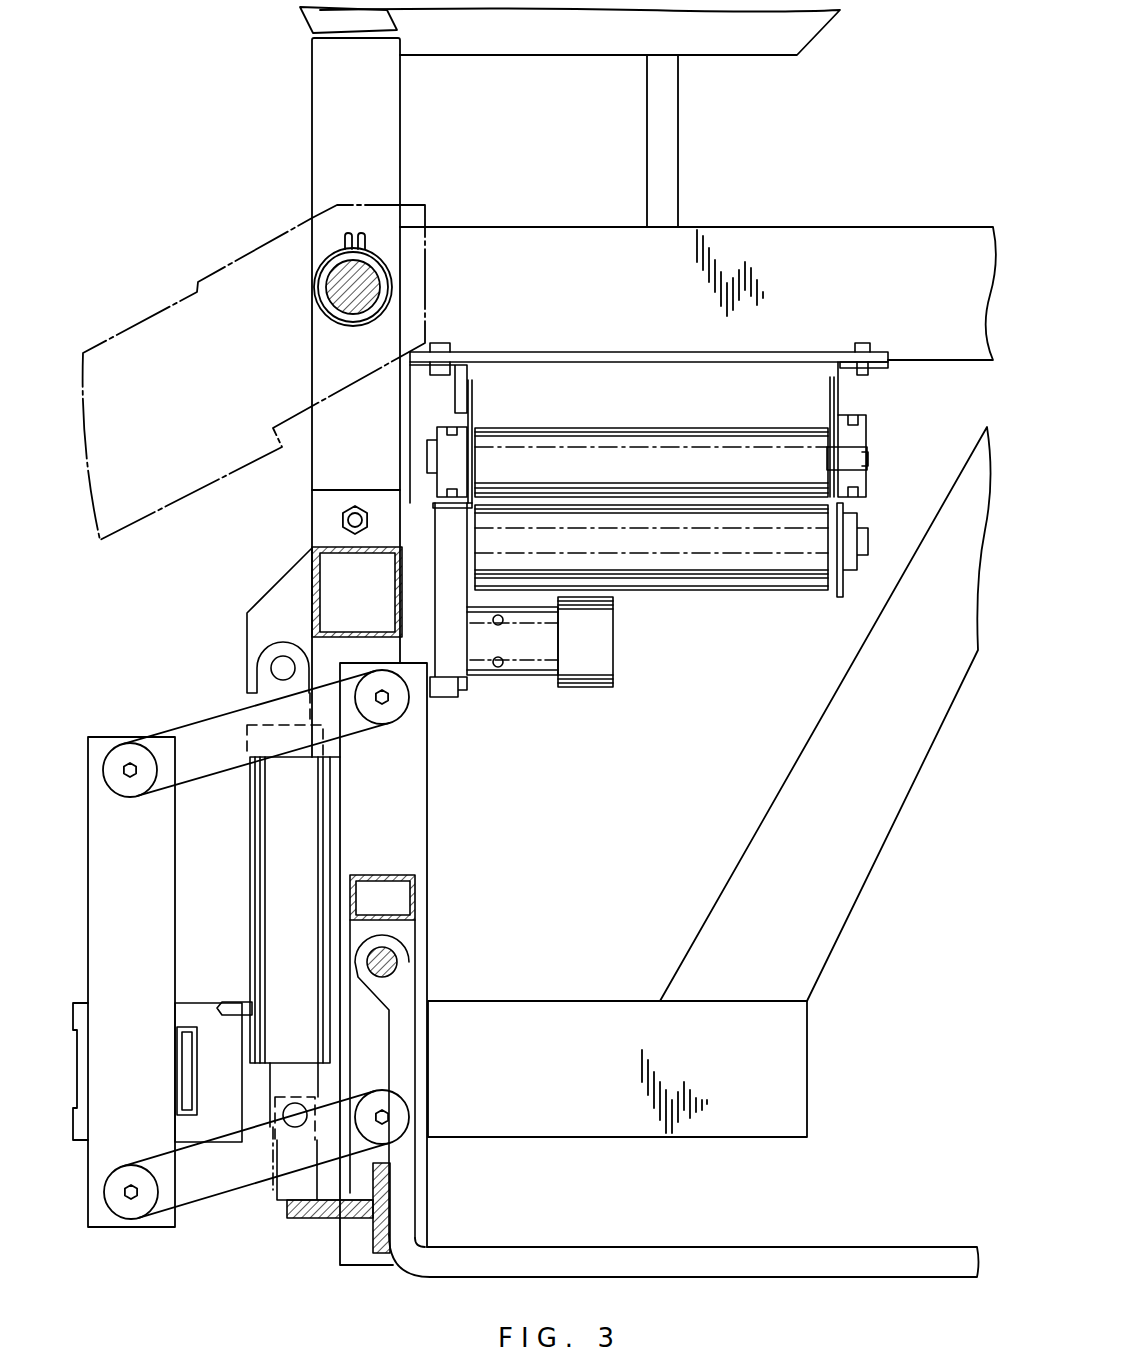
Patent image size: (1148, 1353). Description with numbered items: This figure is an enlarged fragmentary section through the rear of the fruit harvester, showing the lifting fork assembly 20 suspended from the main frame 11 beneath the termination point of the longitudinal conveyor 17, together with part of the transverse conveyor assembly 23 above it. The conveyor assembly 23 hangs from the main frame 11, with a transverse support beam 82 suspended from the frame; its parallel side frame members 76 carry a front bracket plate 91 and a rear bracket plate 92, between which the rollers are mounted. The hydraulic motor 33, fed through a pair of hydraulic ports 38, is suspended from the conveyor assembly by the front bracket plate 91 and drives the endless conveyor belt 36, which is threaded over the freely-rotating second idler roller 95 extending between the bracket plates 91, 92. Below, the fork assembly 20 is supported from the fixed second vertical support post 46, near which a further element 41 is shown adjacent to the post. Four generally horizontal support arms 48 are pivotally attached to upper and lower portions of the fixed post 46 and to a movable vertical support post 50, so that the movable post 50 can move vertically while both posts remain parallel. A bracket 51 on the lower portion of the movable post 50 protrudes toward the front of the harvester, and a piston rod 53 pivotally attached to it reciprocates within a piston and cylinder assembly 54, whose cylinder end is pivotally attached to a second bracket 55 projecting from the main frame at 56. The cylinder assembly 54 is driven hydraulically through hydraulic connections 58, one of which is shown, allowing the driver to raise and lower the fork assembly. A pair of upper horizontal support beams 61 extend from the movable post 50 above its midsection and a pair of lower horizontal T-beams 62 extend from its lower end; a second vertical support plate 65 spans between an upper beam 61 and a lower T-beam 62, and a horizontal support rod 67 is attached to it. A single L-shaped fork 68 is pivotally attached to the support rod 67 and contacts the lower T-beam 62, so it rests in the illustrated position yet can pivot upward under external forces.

The main frame 11 is at (832, 697).
The longitudinal conveyor 17 is at (243, 255).
The lifting fork assembly 20 is at (417, 1066).
The transverse conveyor assembly 23 is at (864, 412).
The hydraulic motor 33 is at (566, 656).
The endless conveyor belt 36 is at (629, 426).
The hydraulic ports 38 is at (502, 659).
The stop block 41 is at (197, 1089).
The second vertical support post 46 is at (107, 897).
The horizontal support arms 48 is at (204, 730).
The movable vertical support post 50 is at (364, 827).
The bracket 51 is at (281, 1196).
The piston rod 53 is at (278, 1091).
The piston and cylinder assembly 54 is at (250, 832).
The second bracket 55 is at (272, 592).
The main frame projection point 56 is at (312, 558).
The hydraulic connections 58 is at (245, 1003).
The upper horizontal support beams 61 is at (416, 905).
The lower horizontal T-beams 62 is at (327, 1218).
The second vertical support plate 65 is at (410, 930).
The horizontal support rod 67 is at (398, 962).
The L-shaped fork 68 is at (594, 1247).
The side frame members 76 is at (473, 408).
The transverse support beam 82 is at (466, 372).
The front bracket plate 91 is at (466, 673).
The rear bracket plate 92 is at (837, 592).
The second idler roller 95 is at (726, 590).